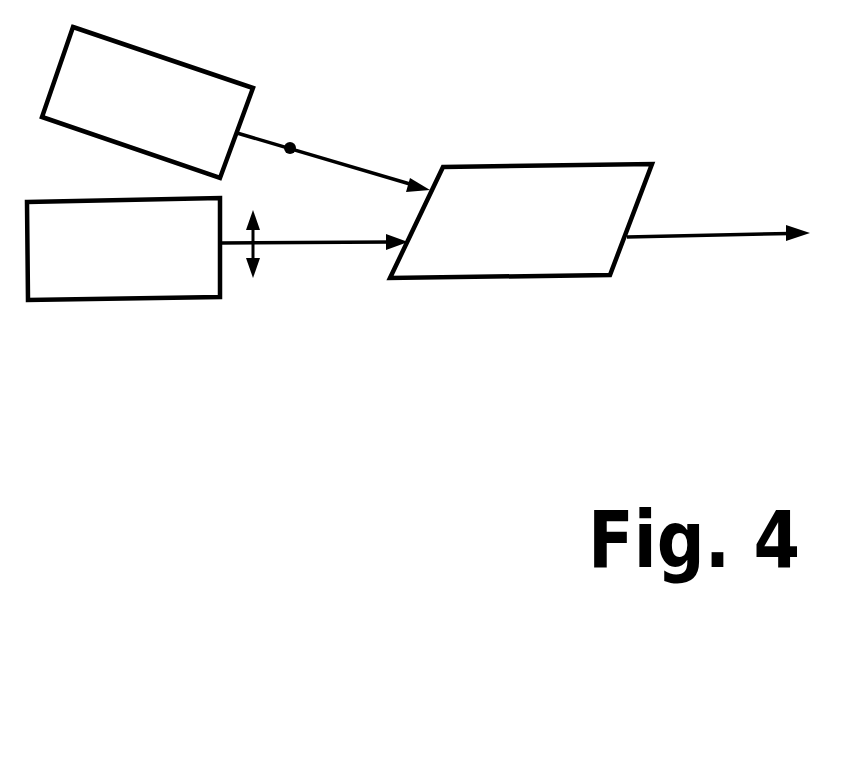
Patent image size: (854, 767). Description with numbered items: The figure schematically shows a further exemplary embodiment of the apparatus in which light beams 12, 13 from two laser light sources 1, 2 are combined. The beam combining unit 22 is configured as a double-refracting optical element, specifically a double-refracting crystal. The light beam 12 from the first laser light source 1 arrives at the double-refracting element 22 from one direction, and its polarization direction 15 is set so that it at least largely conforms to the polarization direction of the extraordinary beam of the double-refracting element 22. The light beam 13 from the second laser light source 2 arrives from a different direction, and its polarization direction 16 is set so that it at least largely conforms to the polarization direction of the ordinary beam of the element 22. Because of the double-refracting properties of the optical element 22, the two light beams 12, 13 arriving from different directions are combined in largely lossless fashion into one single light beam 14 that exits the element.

The laser light source 1 is at (134, 122).
The laser light source 2 is at (136, 273).
The beam combining unit 22 is at (493, 239).
The light beam 12 is at (380, 177).
The light beam 13 is at (327, 243).
The light beam 14 is at (683, 238).
The polarization direction 15 is at (290, 142).
The polarization direction 16 is at (253, 282).